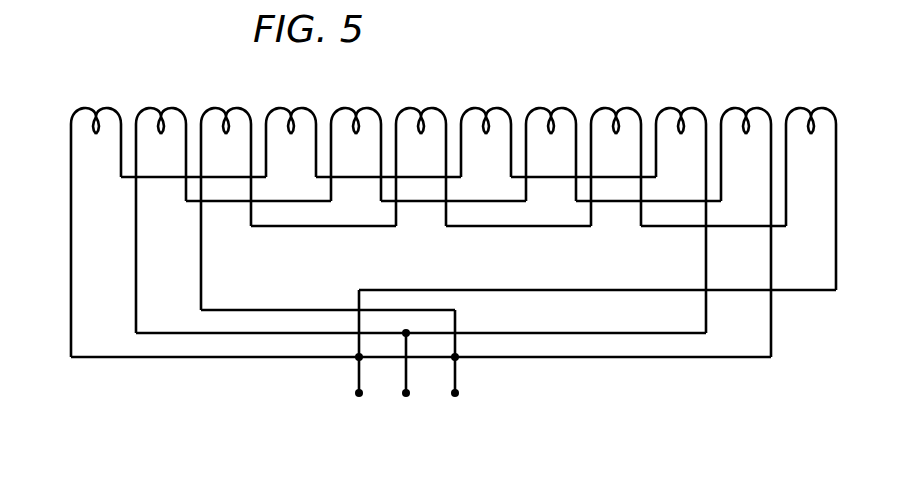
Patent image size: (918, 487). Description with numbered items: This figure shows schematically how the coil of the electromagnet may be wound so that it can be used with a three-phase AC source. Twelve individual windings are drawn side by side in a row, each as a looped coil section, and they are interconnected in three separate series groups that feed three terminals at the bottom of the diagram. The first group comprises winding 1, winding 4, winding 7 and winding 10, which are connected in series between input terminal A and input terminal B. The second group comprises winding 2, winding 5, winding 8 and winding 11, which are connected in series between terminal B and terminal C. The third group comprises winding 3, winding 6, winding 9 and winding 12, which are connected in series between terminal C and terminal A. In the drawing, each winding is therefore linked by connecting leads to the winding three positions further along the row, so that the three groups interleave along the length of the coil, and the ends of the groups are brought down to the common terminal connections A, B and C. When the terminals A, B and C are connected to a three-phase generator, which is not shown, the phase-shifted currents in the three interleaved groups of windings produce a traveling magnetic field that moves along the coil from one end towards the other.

The winding 1 is at (421, 217).
The winding 2 is at (421, 205).
The winding 3 is at (328, 193).
The winding 4 is at (363, 127).
The winding 5 is at (428, 139).
The winding 6 is at (493, 151).
The winding 7 is at (558, 127).
The winding 8 is at (623, 139).
The winding 9 is at (688, 151).
The winding 10 is at (681, 205).
The winding 11 is at (746, 217).
The winding 12 is at (597, 183).
The input terminal A is at (359, 358).
The input terminal B is at (406, 377).
The terminal C is at (455, 368).